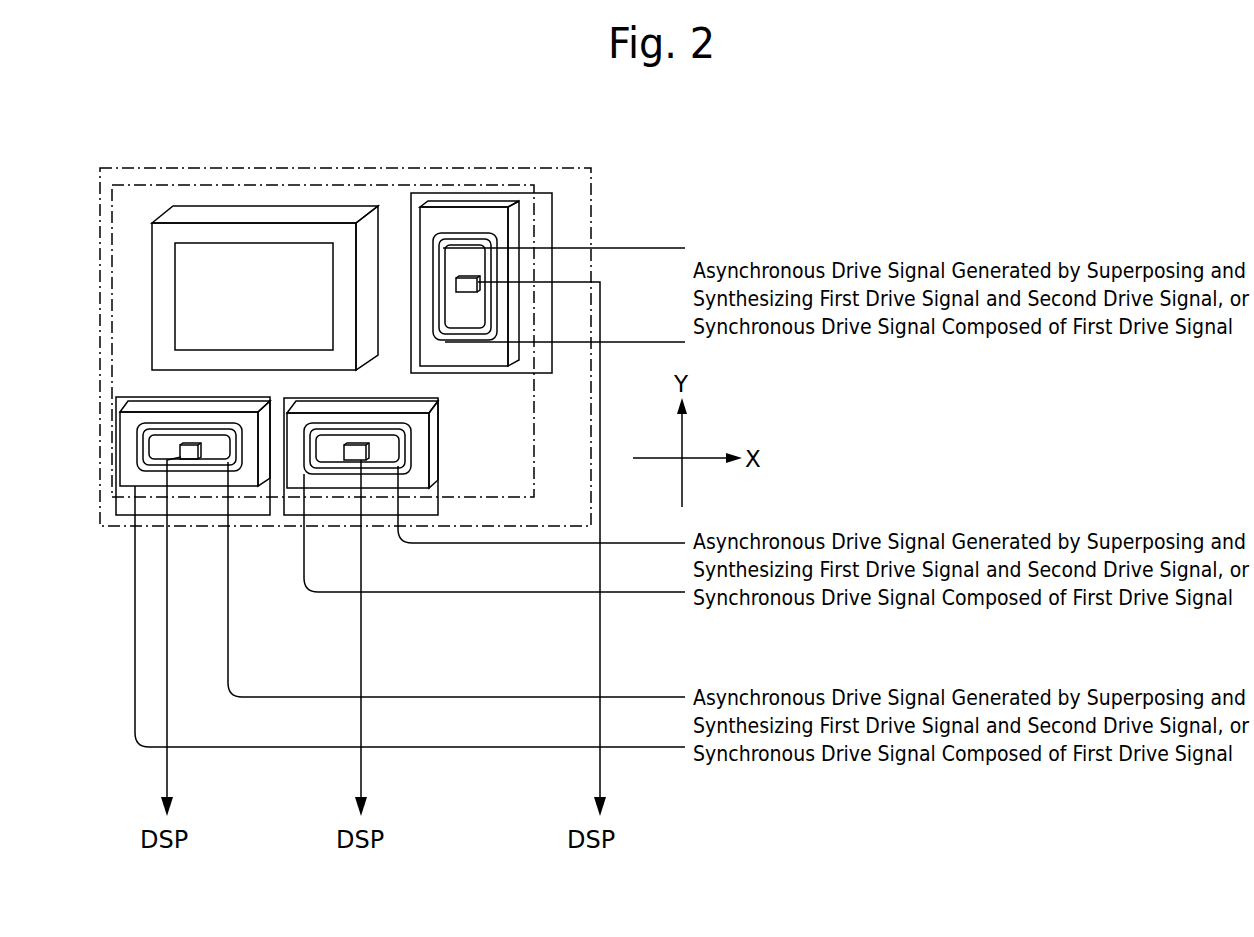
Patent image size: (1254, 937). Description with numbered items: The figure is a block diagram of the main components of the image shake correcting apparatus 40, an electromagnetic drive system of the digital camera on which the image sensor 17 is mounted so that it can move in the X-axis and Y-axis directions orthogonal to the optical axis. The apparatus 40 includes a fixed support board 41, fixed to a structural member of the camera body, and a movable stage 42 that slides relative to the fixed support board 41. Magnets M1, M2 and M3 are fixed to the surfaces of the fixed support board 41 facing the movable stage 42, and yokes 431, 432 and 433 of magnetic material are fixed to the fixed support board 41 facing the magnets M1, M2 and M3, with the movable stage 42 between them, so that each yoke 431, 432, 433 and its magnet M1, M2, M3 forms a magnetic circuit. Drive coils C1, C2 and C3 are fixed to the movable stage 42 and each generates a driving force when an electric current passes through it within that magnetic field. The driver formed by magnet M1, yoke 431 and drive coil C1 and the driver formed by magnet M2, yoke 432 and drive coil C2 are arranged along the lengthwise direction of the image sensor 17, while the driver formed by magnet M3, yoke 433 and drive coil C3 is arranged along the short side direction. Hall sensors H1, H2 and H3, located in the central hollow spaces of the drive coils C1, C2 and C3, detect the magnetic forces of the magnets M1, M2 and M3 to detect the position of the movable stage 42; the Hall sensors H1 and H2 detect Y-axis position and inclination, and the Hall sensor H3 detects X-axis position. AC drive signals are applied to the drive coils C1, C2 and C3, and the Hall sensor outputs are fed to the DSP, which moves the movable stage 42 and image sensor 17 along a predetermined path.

The image shake correcting apparatus 40 is at (388, 152).
The fixed support board 41 is at (197, 167).
The movable stage 42 is at (123, 183).
The image sensor 17 is at (268, 233).
The yoke 431 is at (126, 505).
The yoke 432 is at (383, 508).
The yoke 433 is at (546, 222).
The magnet M1 is at (135, 402).
The magnet M2 is at (433, 433).
The magnet M3 is at (460, 205).
The drive coil C1 is at (137, 449).
The drive coil C2 is at (412, 457).
The drive coil C3 is at (480, 235).
The Hall sensor H1 is at (196, 460).
The Hall sensor H2 is at (353, 460).
The Hall sensor H3 is at (468, 286).